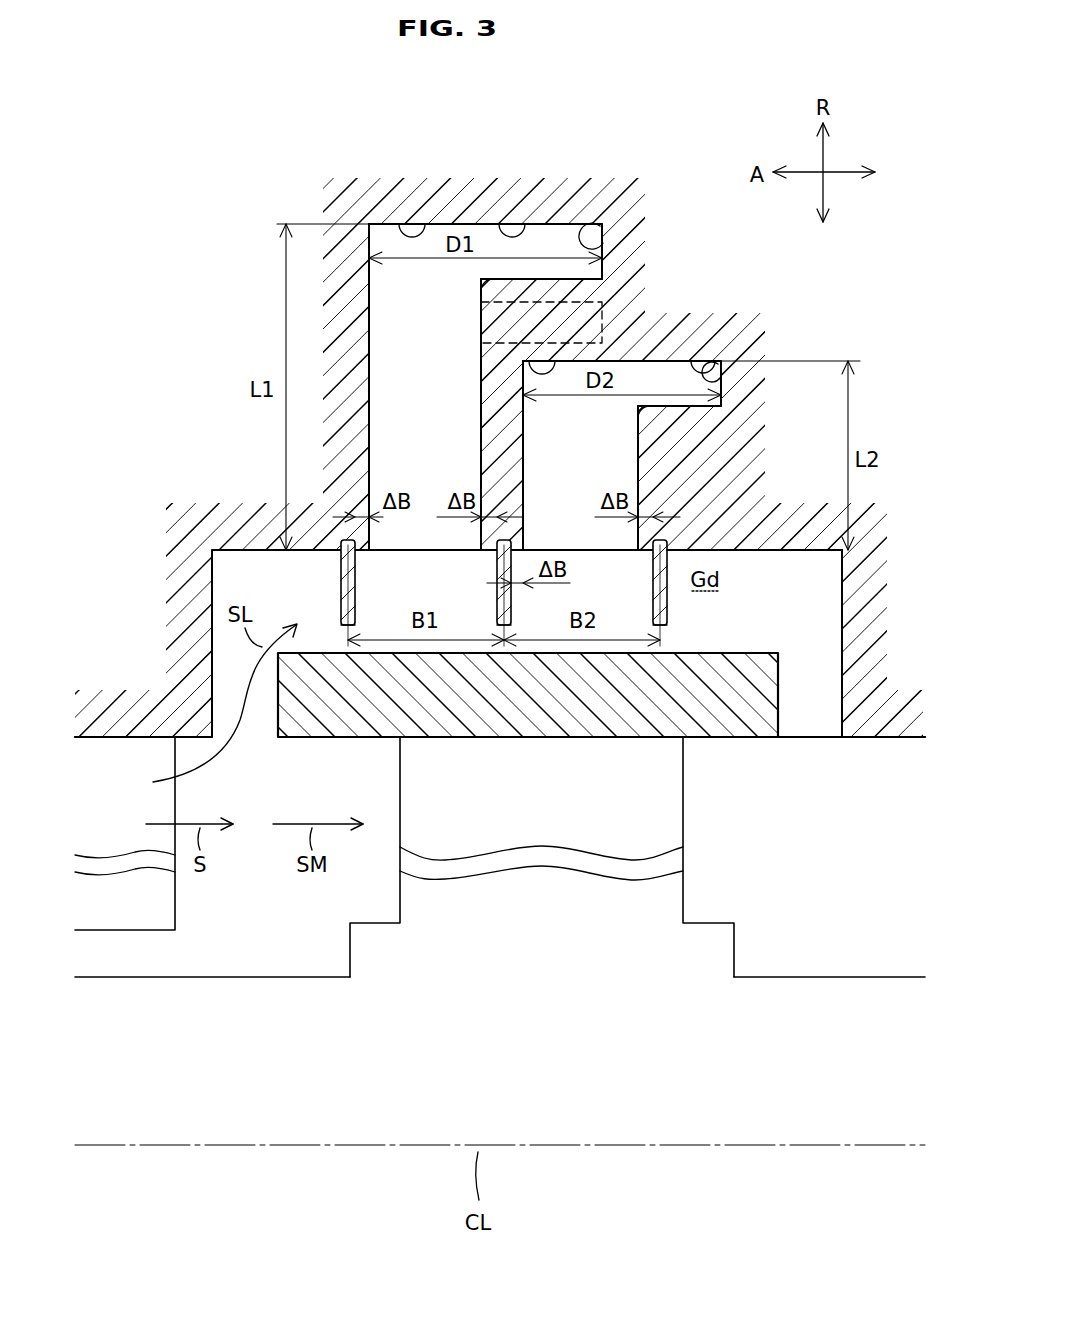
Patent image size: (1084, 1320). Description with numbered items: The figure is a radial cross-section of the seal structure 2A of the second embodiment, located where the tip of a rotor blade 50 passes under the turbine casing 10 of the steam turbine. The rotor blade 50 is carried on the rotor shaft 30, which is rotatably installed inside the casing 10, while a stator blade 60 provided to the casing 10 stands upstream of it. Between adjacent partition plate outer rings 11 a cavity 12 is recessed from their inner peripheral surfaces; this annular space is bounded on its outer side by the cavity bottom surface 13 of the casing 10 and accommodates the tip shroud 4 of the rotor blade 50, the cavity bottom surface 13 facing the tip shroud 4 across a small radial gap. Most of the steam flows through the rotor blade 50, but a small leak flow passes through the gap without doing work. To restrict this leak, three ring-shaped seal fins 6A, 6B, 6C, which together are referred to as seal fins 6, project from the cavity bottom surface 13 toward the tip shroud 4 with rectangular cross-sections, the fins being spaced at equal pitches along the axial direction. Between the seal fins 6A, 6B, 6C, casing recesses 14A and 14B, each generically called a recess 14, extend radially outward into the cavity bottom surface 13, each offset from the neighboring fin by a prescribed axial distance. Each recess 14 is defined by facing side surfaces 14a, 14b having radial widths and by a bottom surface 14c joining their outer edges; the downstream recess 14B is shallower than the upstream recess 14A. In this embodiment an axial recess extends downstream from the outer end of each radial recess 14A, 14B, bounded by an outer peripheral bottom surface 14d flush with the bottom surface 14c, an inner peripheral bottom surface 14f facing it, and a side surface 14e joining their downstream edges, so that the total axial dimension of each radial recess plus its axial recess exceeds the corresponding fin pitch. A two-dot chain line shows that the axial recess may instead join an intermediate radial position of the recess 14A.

The seal structure 2A is at (281, 194).
The tip shroud 4 is at (740, 652).
The seal fin 6 is at (474, 594).
The seal fin 6A is at (341, 600).
The seal fin 6B is at (497, 600).
The seal fin 6C is at (653, 600).
The turbine casing 10 is at (752, 276).
The partition plate outer ring 11 is at (95, 740).
The cavity 12 is at (808, 740).
The cavity bottom surface 13 is at (800, 552).
The recess 14 is at (580, 256).
The radial recess 14A is at (386, 464).
The radial recess 14B is at (540, 523).
The side surface 14a is at (370, 310).
The side surface 14b is at (481, 340).
The bottom surface 14c is at (405, 222).
The outer peripheral bottom surface 14d is at (503, 222).
The side surface 14e is at (603, 220).
The inner peripheral bottom surface 14f is at (500, 277).
The rotor shaft 30 is at (836, 977).
The rotor blade 50 is at (683, 830).
The stator blade 60 is at (170, 903).